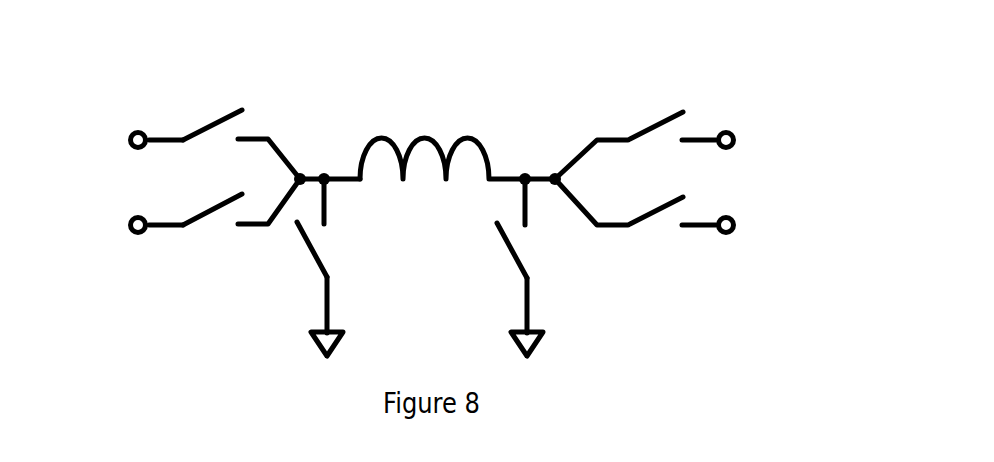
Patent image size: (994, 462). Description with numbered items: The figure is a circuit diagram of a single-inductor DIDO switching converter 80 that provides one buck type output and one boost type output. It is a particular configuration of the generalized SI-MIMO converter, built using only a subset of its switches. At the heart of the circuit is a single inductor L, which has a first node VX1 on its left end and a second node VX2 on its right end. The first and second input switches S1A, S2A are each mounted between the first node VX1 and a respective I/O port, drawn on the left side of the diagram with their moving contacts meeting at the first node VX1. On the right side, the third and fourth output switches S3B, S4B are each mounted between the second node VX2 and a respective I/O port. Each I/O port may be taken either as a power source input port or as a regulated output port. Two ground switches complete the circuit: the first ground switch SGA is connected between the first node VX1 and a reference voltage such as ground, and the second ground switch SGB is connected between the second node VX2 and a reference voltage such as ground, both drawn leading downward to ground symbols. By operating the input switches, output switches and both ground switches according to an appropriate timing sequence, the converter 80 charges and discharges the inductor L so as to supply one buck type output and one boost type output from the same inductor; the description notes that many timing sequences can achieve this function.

The single-inductor DIDO switching converter 80 is at (518, 59).
The first input switch S1A is at (241, 131).
The second input switch S2A is at (241, 199).
The third output switch S3B is at (619, 133).
The fourth output switch S4B is at (619, 198).
The first ground switch SGA is at (294, 289).
The second ground switch SGB is at (494, 289).
The inductor L is at (442, 138).
The first node VX1 is at (327, 182).
The second node VX2 is at (532, 183).